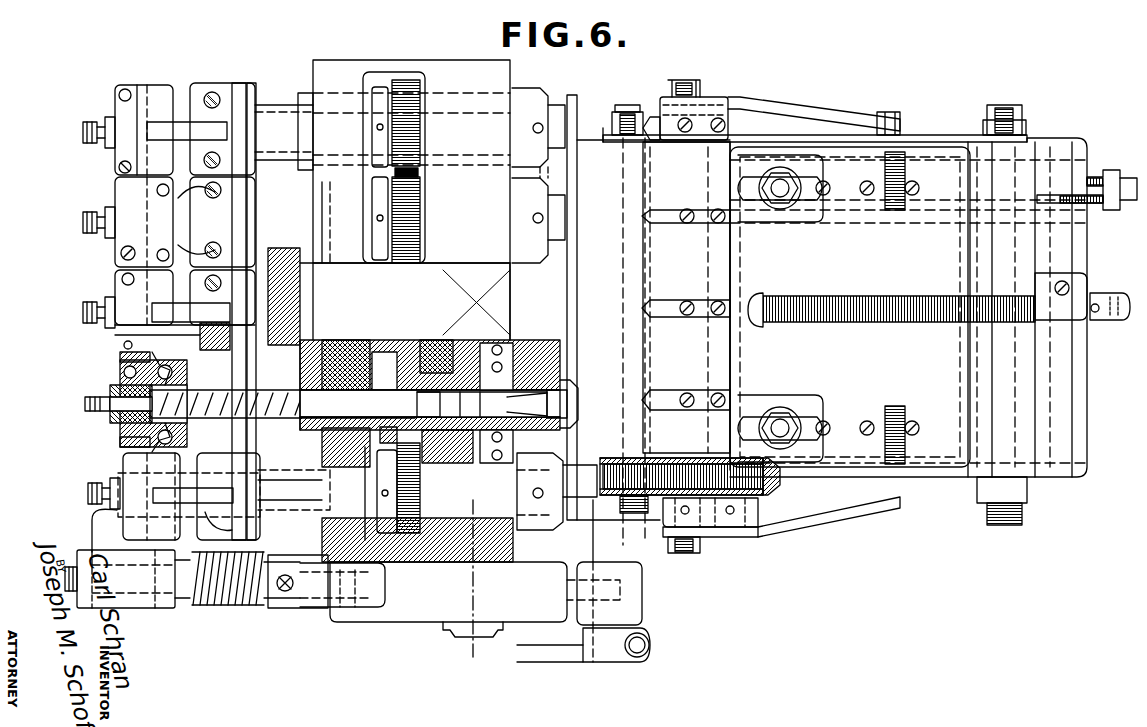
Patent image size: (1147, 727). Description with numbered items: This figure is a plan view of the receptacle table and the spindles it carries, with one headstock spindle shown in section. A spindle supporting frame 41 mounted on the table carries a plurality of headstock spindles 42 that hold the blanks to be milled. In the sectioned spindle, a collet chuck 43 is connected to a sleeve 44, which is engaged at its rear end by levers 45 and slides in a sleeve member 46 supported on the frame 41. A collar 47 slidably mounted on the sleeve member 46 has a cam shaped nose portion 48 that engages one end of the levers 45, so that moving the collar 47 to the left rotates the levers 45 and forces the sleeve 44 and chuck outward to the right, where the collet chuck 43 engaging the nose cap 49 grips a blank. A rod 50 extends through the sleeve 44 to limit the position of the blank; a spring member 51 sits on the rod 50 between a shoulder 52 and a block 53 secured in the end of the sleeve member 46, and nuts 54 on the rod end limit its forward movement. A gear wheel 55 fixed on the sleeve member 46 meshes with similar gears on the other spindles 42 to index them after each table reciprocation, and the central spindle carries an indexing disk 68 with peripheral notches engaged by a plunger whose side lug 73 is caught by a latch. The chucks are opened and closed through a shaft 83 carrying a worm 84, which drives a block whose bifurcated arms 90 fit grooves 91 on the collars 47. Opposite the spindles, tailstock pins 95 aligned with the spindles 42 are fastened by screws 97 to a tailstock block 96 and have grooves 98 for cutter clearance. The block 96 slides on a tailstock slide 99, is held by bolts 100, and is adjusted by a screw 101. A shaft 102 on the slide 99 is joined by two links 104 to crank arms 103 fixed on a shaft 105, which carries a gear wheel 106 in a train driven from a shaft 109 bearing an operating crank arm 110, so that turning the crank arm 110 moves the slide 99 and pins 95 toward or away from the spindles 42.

The spindle supporting frame 41 is at (590, 147).
The headstock spindles 42 is at (537, 92).
The collet chuck 43 is at (568, 401).
The sleeve 44 is at (262, 488).
The levers 45 is at (187, 358).
The sleeve member 46 is at (268, 480).
The collar 47 is at (266, 345).
The cam shaped nose portion 48 is at (150, 368).
The nose cap 49 is at (545, 380).
The rod 50 is at (557, 491).
The spring member 51 is at (312, 418).
The shoulder 52 is at (428, 408).
The block 53 is at (118, 418).
The nuts 54 is at (98, 402).
The gear wheel 55 is at (392, 445).
The indexing disk 68 is at (300, 213).
The lug 73 is at (283, 250).
The shaft 83 is at (68, 568).
The worm 84 is at (218, 600).
The bifurcated arms 90 is at (240, 92).
The grooves 91 is at (245, 112).
The tailstock pins 95 is at (652, 120).
The tailstock block 96 is at (808, 360).
The screws 97 is at (716, 300).
The grooves 98 is at (700, 392).
The tailstock slide 99 is at (1030, 475).
The bolts 100 is at (783, 203).
The screw 101 is at (898, 305).
The shaft 102 is at (1003, 105).
The crank arms 103 is at (700, 97).
The links 104 is at (812, 112).
The shaft 105 is at (736, 518).
The gear wheel 106 is at (780, 487).
The shaft 109 is at (623, 547).
The operating crank arm 110 is at (574, 655).